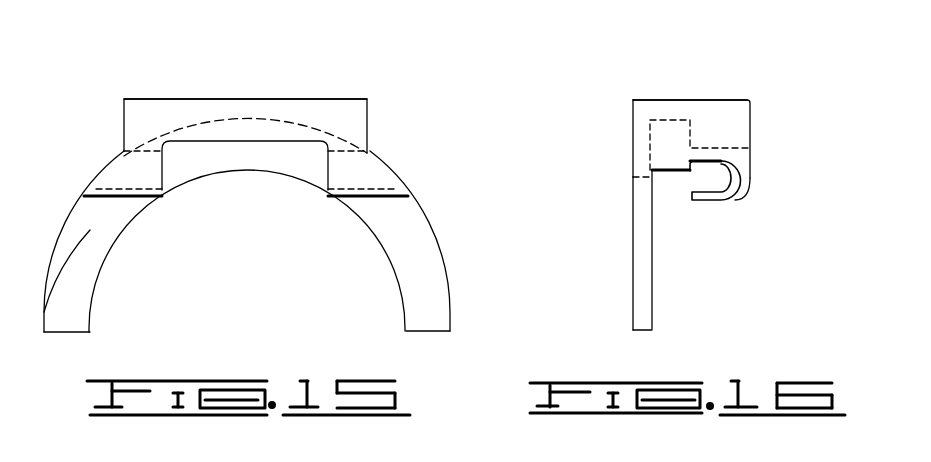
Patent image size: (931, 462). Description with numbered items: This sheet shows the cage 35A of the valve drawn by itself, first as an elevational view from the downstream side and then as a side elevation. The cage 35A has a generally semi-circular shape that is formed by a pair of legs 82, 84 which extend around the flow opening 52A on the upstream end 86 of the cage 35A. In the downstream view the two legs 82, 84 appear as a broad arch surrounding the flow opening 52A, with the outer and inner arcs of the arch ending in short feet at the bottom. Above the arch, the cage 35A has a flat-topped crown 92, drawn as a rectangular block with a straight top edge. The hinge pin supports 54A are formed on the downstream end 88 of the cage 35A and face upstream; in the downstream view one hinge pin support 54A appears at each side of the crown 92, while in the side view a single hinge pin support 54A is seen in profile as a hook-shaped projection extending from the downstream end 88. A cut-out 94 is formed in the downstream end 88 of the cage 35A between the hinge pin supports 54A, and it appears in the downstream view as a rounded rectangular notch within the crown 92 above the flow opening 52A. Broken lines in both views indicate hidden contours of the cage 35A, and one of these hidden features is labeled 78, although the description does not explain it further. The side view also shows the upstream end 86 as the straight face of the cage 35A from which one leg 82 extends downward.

In FIG. 15, the cage 35A is at (171, 94).
In FIG. 16, the cage 35A is at (697, 97).
In FIG. 15, the hidden opening 78 is at (228, 131).
In FIG. 16, the hidden opening 78 is at (668, 135).
In FIG. 15, the flat-topped crown 92 is at (307, 97).
In FIG. 16, the flat-topped crown 92 is at (722, 100).
In FIG. 15, the cut-out 94 is at (223, 158).
In FIG. 15, the hinge pin supports 54A is at (118, 176).
In FIG. 16, the hinge pin supports 54A is at (717, 197).
In FIG. 15, the flow opening 52A is at (302, 280).
In FIG. 15, the leg 82 is at (98, 293).
In FIG. 16, the leg 82 is at (633, 285).
In FIG. 15, the leg 84 is at (402, 285).
In FIG. 16, the upstream end 86 is at (632, 130).
In FIG. 16, the downstream end 88 is at (752, 127).